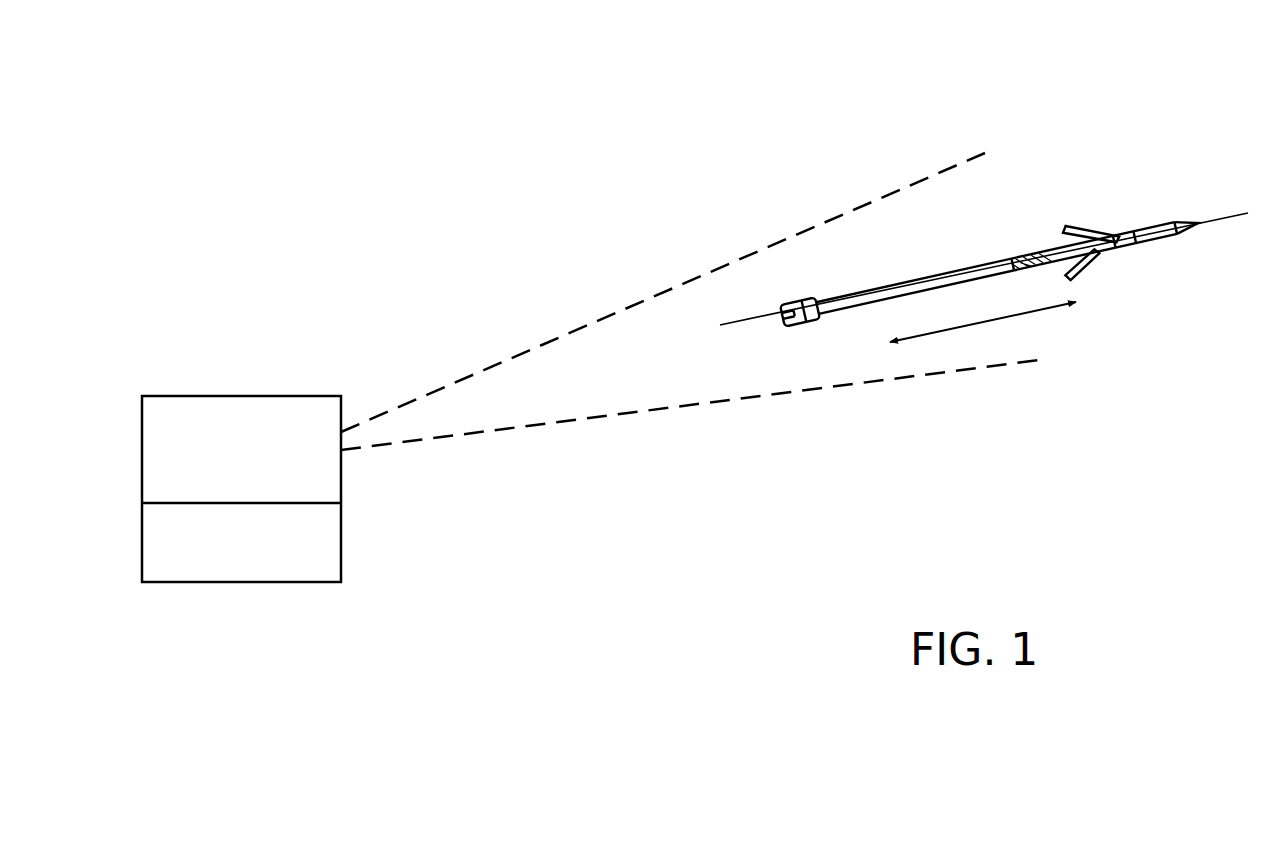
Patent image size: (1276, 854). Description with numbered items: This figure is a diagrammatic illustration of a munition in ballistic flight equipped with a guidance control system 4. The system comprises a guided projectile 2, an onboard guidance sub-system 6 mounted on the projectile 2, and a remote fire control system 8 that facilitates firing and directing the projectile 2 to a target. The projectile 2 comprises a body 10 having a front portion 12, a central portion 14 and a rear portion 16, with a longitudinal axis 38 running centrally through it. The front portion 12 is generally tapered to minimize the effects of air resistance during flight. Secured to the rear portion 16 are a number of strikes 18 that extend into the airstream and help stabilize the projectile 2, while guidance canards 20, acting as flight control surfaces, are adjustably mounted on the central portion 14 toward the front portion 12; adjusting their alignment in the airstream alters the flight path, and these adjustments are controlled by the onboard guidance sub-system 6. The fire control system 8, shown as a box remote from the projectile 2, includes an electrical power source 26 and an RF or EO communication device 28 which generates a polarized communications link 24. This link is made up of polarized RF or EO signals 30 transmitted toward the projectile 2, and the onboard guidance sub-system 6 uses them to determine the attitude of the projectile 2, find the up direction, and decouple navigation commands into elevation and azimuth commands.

The guided projectile 2 is at (994, 272).
The guidance control system 4 is at (468, 203).
The onboard guidance sub-system 6 is at (1033, 250).
The remote fire control system 8 is at (210, 350).
The body 10 is at (958, 98).
The front portion 12 is at (1145, 202).
The central portion 14 is at (955, 228).
The rear portion 16 is at (815, 268).
The strikes 18 is at (804, 330).
The guidance canards 20 is at (1105, 262).
The polarized communications link 24 is at (430, 358).
The electrical power source 26 is at (300, 583).
The RF or EO communication device 28 is at (342, 483).
The polarized RF or EO signals 30 is at (520, 430).
The longitudinal axis 38 is at (1210, 216).